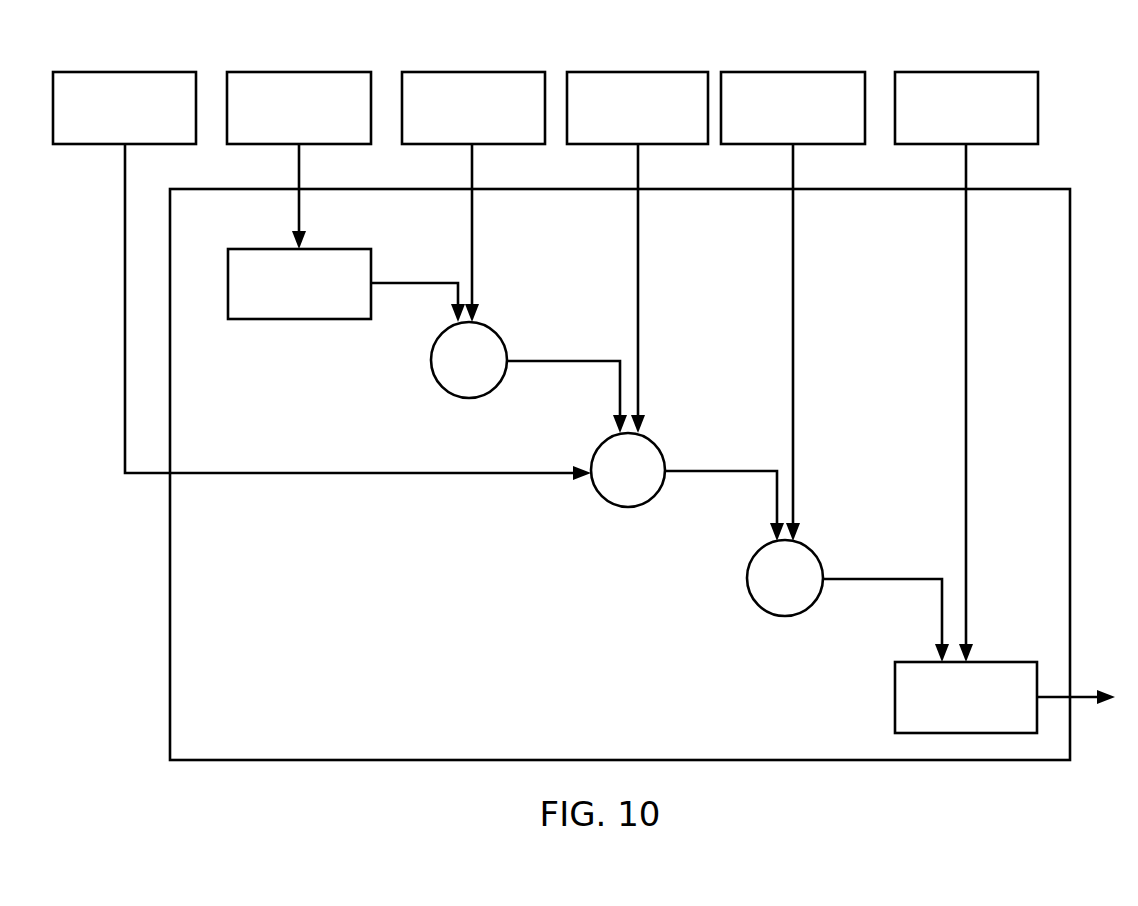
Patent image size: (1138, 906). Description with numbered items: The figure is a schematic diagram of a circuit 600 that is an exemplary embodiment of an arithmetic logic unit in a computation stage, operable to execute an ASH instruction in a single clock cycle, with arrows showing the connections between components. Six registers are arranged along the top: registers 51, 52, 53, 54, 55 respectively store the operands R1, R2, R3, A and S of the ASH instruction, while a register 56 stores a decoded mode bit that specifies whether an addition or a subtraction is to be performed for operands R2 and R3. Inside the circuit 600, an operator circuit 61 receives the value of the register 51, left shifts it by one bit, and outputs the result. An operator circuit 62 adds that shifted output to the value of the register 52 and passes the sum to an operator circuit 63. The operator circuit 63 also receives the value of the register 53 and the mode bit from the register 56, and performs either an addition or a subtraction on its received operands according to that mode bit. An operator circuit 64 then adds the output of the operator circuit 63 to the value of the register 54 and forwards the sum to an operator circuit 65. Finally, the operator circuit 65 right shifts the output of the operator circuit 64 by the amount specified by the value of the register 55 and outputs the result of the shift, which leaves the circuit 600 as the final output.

The circuit 600 is at (1070, 189).
The register 51 is at (303, 72).
The register 52 is at (475, 72).
The register 53 is at (643, 72).
The register 54 is at (789, 72).
The register 55 is at (973, 72).
The register 56 is at (135, 72).
The operator circuit 61 is at (341, 249).
The operator circuit 62 is at (498, 340).
The operator circuit 63 is at (656, 449).
The operator circuit 64 is at (814, 557).
The operator circuit 65 is at (1009, 662).